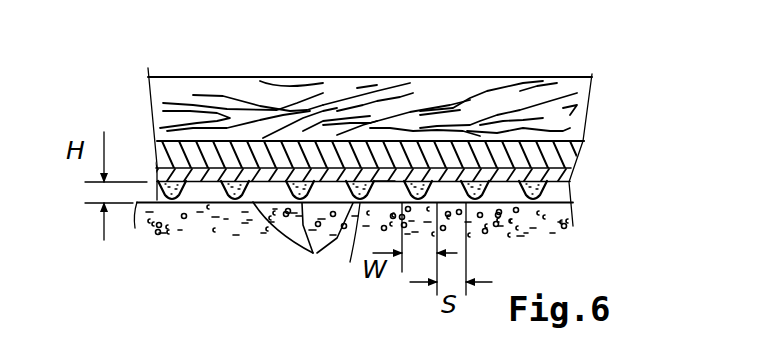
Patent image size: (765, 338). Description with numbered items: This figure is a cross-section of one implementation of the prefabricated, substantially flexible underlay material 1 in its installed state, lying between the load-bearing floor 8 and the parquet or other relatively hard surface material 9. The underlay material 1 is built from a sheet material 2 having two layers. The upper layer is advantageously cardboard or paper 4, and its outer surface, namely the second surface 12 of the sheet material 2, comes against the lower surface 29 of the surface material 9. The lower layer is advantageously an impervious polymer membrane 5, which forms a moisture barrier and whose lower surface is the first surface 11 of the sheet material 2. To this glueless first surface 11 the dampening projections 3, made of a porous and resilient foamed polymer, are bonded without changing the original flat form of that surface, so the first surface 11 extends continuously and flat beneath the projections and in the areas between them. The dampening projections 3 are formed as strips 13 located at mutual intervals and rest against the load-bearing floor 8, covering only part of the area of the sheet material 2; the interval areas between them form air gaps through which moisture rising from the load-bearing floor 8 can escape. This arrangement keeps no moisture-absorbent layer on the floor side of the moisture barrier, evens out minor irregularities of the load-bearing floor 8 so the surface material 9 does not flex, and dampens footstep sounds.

The underlay material 1 is at (149, 163).
The sheet material 2 is at (488, 159).
The dampening projections 3 is at (190, 204).
The cardboard or paper 4 is at (572, 150).
The polymer membrane 5 is at (567, 177).
The load-bearing floor 8 is at (240, 204).
The surface material 9 is at (337, 98).
The first surface 11 is at (513, 213).
The second surface 12 is at (410, 139).
The strips 13 is at (303, 242).
The lower surface 29 is at (395, 143).